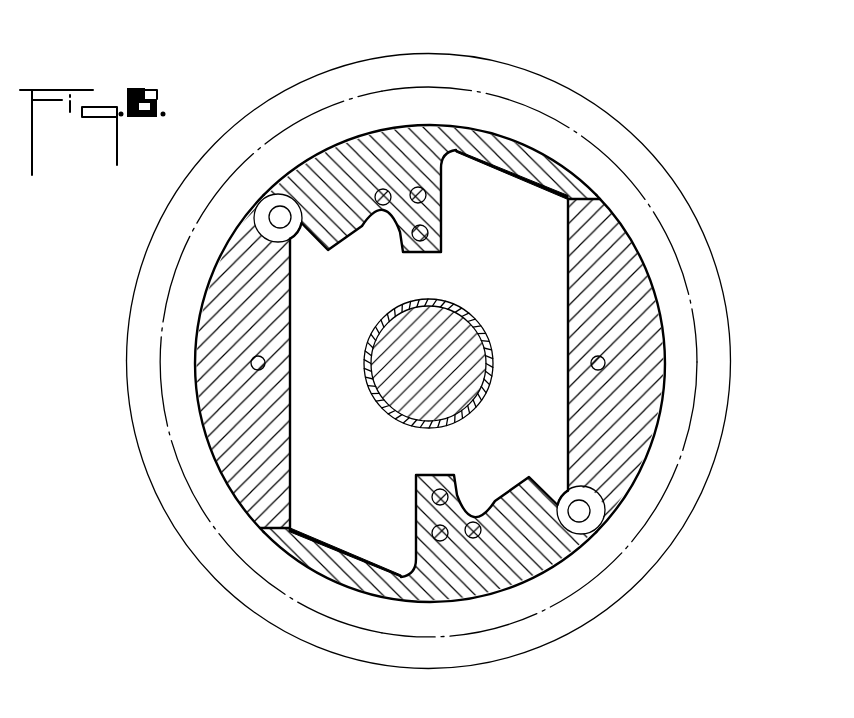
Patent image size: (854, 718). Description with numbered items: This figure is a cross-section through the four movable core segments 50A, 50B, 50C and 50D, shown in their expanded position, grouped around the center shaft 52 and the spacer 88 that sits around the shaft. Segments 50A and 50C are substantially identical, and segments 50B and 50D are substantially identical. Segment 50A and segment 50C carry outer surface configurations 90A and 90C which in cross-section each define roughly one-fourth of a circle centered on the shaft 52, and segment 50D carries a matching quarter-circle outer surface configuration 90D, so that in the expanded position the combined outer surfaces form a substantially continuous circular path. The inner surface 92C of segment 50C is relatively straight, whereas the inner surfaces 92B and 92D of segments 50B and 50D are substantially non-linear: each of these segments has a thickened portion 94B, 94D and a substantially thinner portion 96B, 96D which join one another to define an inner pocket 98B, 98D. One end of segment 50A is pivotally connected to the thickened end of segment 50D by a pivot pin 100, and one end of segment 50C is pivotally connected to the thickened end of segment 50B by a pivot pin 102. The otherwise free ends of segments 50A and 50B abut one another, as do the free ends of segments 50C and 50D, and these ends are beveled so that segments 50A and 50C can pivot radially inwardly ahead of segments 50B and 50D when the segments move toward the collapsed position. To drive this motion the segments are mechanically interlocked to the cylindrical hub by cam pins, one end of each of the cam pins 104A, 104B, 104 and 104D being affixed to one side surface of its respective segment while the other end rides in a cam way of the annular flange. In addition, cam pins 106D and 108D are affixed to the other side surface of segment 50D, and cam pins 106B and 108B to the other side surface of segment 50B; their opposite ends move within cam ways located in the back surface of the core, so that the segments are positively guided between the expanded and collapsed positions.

The core segment 50A is at (182, 347).
The core segment 50B is at (486, 613).
The core segment 50C is at (676, 388).
The core segment 50D is at (456, 112).
The shaft 52 is at (479, 330).
The spacer 88 is at (405, 306).
The outer surface configuration 90A is at (203, 429).
The outer surface configuration 90C is at (660, 431).
The outer surface configuration 90D is at (506, 137).
The inner surface 92B is at (417, 474).
The inner surface 92C is at (568, 274).
The inner surface 92D is at (444, 250).
The thickened portion 94B is at (538, 566).
The thickened portion 94D is at (322, 165).
The thinner portion 96B is at (325, 572).
The thinner portion 96D is at (548, 163).
The inner pocket 98B is at (370, 563).
The inner pocket 98D is at (523, 180).
The pivot pin 100 is at (268, 210).
The pivot pin 102 is at (594, 530).
The cam pin 104 is at (592, 363).
The cam pin 104A is at (266, 363).
The cam pin 104B is at (478, 518).
The cam pin 104D is at (378, 191).
The cam pin 106B is at (447, 522).
The cam pin 106D is at (427, 194).
The cam pin 108B is at (433, 488).
The cam pin 108D is at (429, 235).